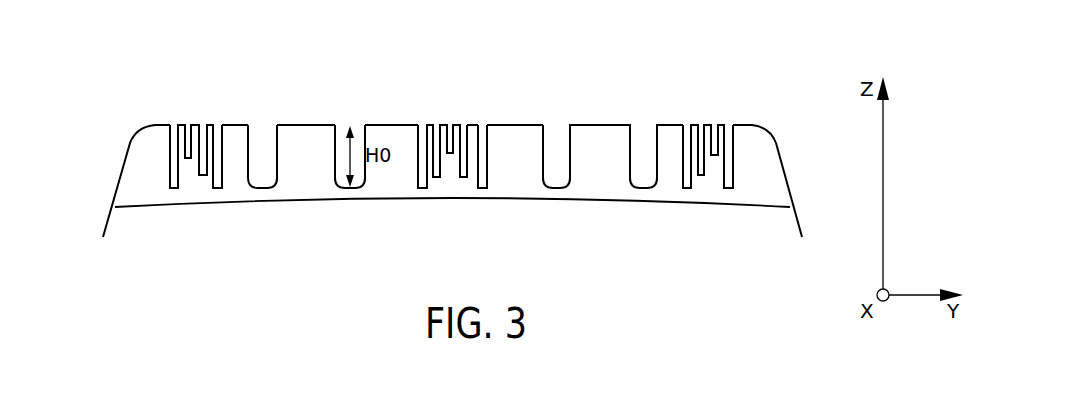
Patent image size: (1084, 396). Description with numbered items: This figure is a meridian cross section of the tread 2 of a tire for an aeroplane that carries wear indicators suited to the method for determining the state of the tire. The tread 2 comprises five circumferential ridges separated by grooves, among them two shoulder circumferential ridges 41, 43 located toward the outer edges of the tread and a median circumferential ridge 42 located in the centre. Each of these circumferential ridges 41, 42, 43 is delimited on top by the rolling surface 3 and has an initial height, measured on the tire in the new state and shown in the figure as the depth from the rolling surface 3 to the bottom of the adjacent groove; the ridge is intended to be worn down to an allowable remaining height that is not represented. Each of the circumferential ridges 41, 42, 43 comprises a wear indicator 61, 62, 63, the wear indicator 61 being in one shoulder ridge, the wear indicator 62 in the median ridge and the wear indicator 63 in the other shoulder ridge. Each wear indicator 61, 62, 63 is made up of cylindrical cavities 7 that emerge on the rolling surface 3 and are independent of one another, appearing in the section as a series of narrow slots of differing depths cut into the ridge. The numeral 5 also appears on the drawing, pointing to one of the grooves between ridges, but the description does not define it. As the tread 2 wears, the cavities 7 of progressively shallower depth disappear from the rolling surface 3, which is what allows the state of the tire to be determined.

The tread 2 is at (104, 159).
The rolling surface 3 is at (318, 115).
The groove 5 is at (266, 116).
The cylindrical cavities 7 is at (473, 114).
The shoulder circumferential ridge 41 is at (147, 120).
The median circumferential ridge 42 is at (506, 118).
The shoulder circumferential ridge 43 is at (749, 121).
The wear indicator 61 is at (182, 112).
The wear indicator 62 is at (450, 112).
The wear indicator 63 is at (703, 112).